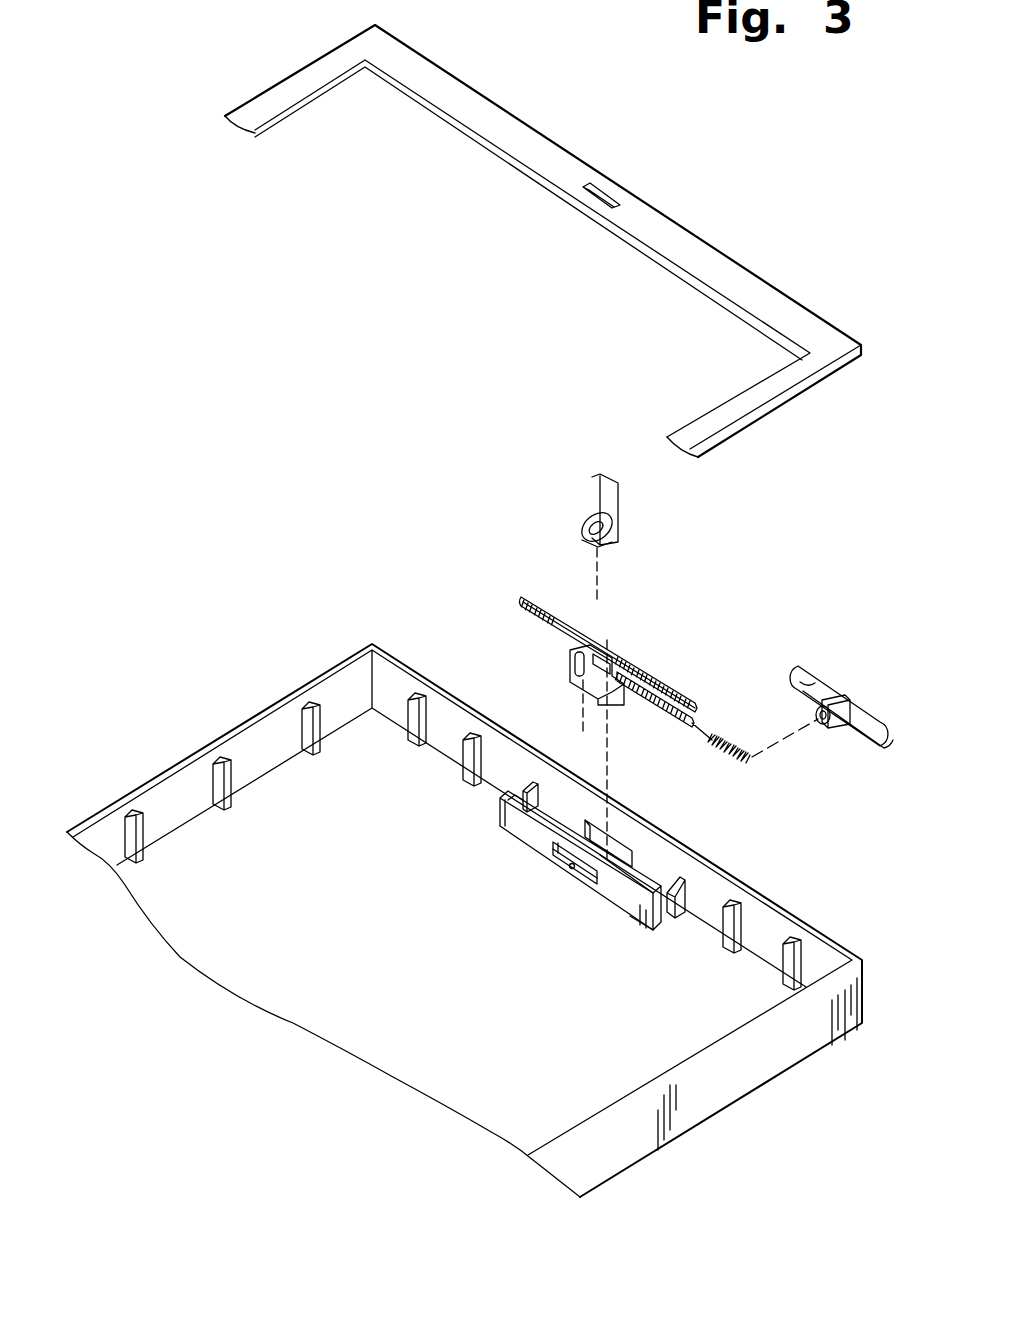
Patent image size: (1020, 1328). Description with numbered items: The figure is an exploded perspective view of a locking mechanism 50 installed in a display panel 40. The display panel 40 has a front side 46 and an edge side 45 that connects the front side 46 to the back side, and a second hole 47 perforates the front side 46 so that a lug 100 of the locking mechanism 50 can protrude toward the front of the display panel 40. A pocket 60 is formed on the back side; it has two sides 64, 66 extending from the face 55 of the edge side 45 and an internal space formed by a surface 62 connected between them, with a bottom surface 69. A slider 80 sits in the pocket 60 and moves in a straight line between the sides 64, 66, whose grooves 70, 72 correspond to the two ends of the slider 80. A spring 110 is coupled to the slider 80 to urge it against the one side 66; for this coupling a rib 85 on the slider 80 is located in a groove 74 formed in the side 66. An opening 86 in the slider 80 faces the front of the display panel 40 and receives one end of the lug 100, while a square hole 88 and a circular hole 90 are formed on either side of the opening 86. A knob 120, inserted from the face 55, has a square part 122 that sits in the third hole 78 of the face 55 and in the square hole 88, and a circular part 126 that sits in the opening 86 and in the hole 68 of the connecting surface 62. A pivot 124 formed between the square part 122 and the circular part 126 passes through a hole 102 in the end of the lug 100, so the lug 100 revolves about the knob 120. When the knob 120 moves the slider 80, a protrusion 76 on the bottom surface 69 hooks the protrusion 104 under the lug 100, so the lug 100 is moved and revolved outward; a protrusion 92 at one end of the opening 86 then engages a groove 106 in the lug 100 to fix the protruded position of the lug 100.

The display panel 40 is at (288, 27).
The edge side 45 is at (702, 1107).
The front side 46 is at (835, 385).
The second hole 47 is at (603, 194).
The locking mechanism 50 is at (780, 543).
The face 55 is at (812, 930).
The pocket 60 is at (506, 833).
The surface 62 is at (627, 903).
The side 64 is at (531, 788).
The side 66 is at (667, 927).
The hole 68 is at (562, 857).
The bottom surface 69 is at (572, 866).
The groove 70 is at (520, 797).
The groove 72 is at (683, 890).
The groove 74 is at (678, 918).
The protrusion 76 is at (597, 878).
The third hole 78 is at (633, 858).
The slider 80 is at (522, 631).
The rib 85 is at (667, 714).
The opening 86 is at (582, 628).
The square hole 88 is at (597, 662).
The circular hole 90 is at (586, 705).
The protrusion 92 is at (607, 648).
The lug 100 is at (633, 526).
The hole 102 is at (596, 498).
The protrusion 104 is at (585, 532).
The groove 106 is at (615, 540).
The spring 110 is at (730, 747).
The knob 120 is at (803, 666).
The square part 122 is at (838, 690).
The pivot 124 is at (858, 736).
The circular part 126 is at (827, 730).